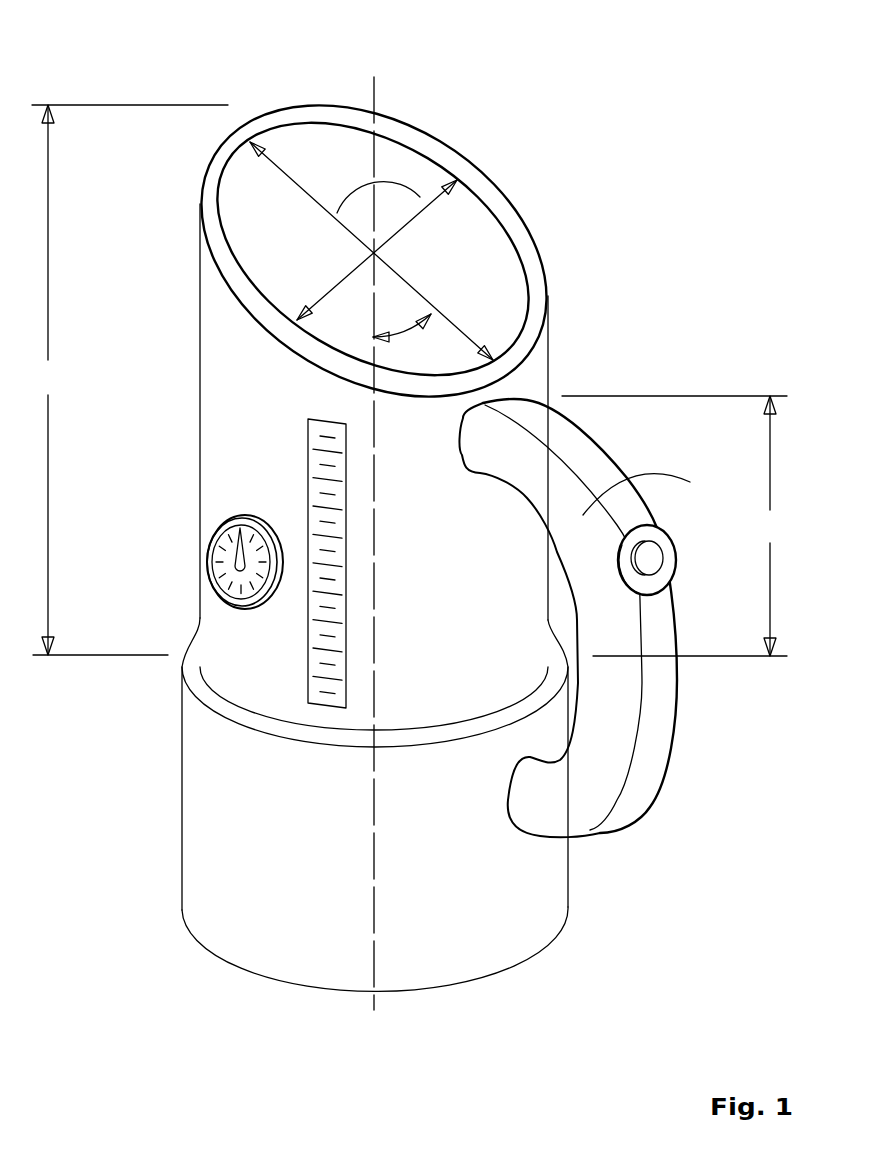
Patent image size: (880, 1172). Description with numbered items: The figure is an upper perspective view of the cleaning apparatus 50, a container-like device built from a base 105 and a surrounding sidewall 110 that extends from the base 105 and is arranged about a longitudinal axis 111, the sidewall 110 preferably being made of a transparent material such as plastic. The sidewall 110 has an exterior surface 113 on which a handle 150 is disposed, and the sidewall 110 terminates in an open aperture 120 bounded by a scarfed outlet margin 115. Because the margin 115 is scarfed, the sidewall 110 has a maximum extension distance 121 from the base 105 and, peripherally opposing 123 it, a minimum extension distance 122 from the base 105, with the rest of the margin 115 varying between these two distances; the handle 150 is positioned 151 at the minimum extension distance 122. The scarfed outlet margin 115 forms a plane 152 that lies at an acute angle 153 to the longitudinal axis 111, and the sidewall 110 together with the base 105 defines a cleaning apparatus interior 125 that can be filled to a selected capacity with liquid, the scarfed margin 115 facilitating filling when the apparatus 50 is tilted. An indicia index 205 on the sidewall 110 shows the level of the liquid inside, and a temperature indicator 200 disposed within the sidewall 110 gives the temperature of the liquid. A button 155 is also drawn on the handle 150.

The cleaning apparatus 50 is at (695, 58).
The base 105 is at (198, 810).
The surrounding sidewall 110 is at (265, 487).
The longitudinal axis 111 is at (375, 92).
The exterior surface 113 is at (453, 663).
The scarfed outlet margin 115 is at (273, 107).
The open aperture 120 is at (344, 144).
The maximum extension distance 121 is at (129, 380).
The minimum extension distance 122 is at (676, 526).
The peripherally opposing 123 is at (280, 172).
The cleaning apparatus interior 125 is at (323, 266).
The handle 150 is at (630, 703).
The handle position 151 is at (657, 470).
The plane 152 is at (410, 187).
The acute angle 153 is at (407, 333).
The button 155 is at (657, 555).
The temperature indicator 200 is at (207, 568).
The indicia index 205 is at (318, 440).